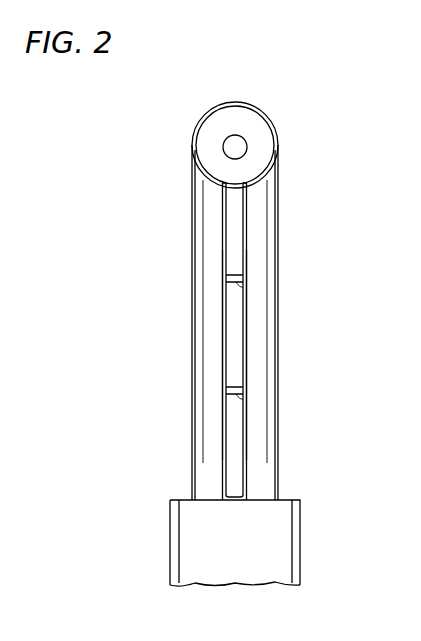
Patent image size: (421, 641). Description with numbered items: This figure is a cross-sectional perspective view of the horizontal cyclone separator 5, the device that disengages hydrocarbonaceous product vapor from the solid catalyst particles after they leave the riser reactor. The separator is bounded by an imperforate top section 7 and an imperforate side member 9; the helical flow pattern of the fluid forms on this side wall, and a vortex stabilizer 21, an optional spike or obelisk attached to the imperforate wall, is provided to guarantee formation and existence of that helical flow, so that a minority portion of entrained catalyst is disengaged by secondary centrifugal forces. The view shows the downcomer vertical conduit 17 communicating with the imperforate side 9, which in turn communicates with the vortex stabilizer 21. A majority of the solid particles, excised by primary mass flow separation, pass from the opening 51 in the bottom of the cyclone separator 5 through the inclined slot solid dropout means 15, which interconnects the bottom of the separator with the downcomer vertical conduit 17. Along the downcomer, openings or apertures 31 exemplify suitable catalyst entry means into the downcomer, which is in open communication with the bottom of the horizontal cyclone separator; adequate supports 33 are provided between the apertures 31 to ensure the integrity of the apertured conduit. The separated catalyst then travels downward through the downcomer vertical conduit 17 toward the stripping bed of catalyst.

The horizontal cyclone separator 5 is at (232, 63).
The imperforate top section 7 is at (212, 108).
The imperforate side member 9 is at (255, 123).
The vortex stabilizer 21 is at (247, 147).
The inclined slot solid dropout means 15 is at (247, 221).
The downcomer vertical conduit 17 is at (280, 258).
The opening 51 is at (232, 185).
The openings or apertures 31 is at (233, 333).
The supports 33 is at (243, 285).